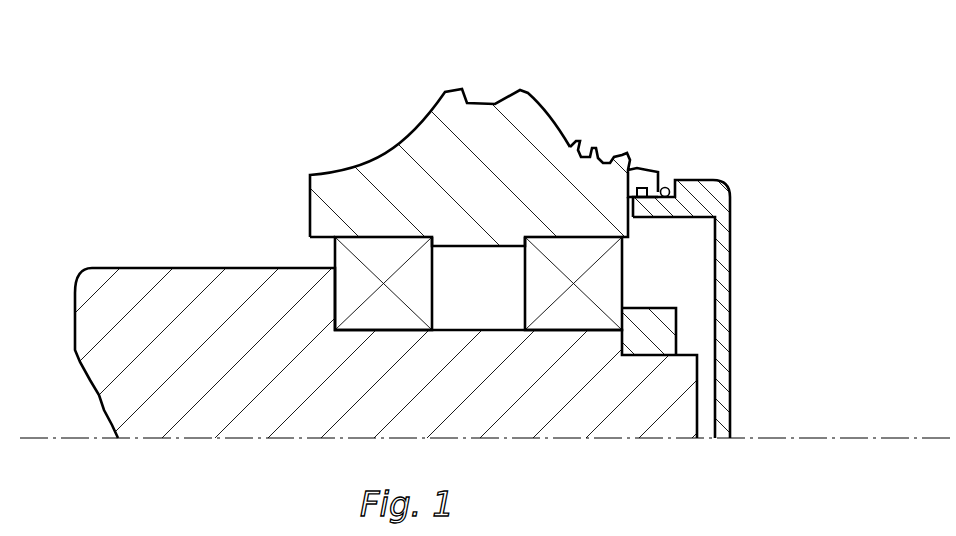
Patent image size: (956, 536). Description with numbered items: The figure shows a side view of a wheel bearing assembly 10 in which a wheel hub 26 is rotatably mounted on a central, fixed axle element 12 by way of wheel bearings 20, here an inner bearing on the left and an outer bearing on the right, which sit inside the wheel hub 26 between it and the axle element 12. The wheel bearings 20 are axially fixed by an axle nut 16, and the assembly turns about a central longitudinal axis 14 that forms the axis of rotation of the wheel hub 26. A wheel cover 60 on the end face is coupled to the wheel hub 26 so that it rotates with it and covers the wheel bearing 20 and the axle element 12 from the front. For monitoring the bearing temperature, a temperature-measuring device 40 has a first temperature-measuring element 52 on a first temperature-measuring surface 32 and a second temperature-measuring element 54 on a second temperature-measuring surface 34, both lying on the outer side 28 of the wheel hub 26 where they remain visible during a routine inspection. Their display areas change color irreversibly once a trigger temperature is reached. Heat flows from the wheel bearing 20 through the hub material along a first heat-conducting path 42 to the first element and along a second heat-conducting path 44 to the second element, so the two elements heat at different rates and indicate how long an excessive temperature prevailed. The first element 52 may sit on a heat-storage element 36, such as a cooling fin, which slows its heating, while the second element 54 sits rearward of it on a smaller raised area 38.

The wheel bearing assembly 10 is at (146, 83).
The axle element 12 is at (202, 420).
The longitudinal axis 14 is at (578, 443).
The axle nut 16 is at (662, 338).
The wheel bearings 20 is at (522, 265).
The wheel hub 26 is at (340, 198).
The outer side 28 is at (530, 90).
The first temperature-measuring surface 32 is at (582, 137).
The second temperature-measuring surface 34 is at (633, 158).
The heat-storage element 36 is at (572, 148).
The raised area 38 is at (637, 162).
The temperature-measuring device 40 is at (660, 55).
The first heat-conducting path 42 is at (567, 202).
The second heat-conducting path 44 is at (608, 202).
The first temperature-measuring element 52 is at (593, 142).
The second temperature-measuring element 54 is at (627, 150).
The wheel cover 60 is at (725, 343).